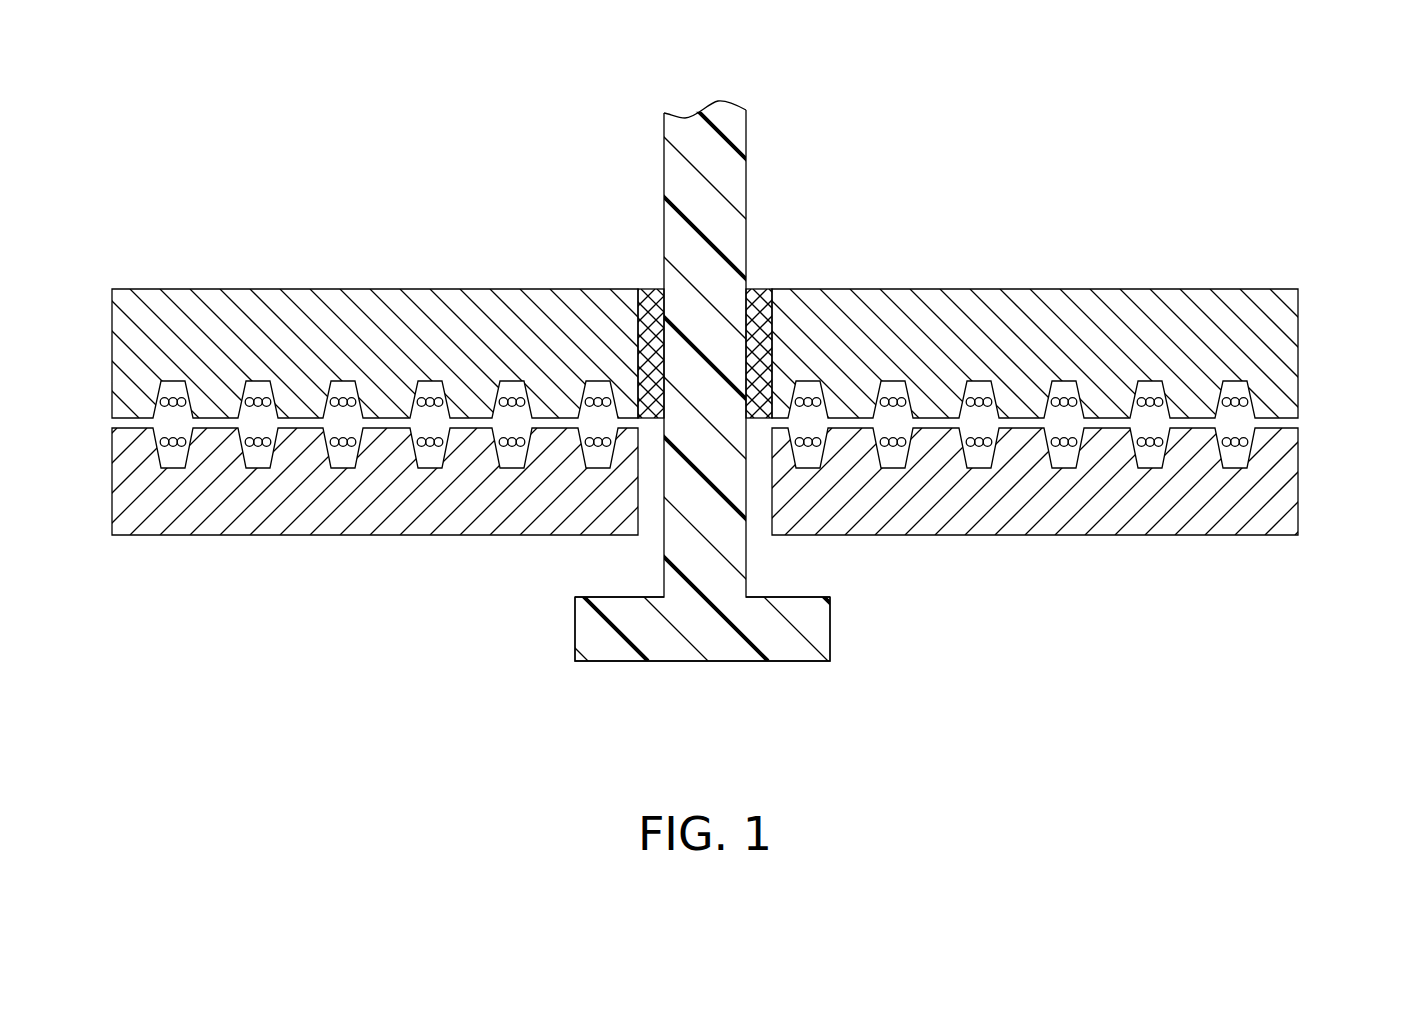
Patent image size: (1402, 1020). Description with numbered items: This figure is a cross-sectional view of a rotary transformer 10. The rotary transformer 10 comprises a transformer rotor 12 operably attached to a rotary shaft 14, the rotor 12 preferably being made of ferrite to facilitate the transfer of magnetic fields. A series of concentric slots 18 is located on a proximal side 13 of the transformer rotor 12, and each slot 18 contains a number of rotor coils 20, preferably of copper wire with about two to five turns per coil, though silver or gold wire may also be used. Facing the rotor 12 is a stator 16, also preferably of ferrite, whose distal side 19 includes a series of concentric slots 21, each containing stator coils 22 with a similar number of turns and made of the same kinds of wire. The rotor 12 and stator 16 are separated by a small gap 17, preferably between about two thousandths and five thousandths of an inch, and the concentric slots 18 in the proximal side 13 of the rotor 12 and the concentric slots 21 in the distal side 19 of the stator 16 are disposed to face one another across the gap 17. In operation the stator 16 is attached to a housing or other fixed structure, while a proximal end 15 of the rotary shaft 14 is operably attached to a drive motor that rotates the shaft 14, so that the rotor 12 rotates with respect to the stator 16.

The rotary transformer 10 is at (413, 137).
The transformer rotor 12 is at (1017, 307).
The proximal side 13 is at (847, 416).
The rotary shaft 14 is at (737, 168).
The proximal end 15 is at (768, 661).
The stator 16 is at (1285, 505).
The gap 17 is at (1308, 422).
The concentric slots 18 is at (175, 381).
The distal side 19 is at (840, 433).
The rotor coils 20 is at (362, 398).
The concentric slots 21 is at (173, 470).
The stator coils 22 is at (362, 440).